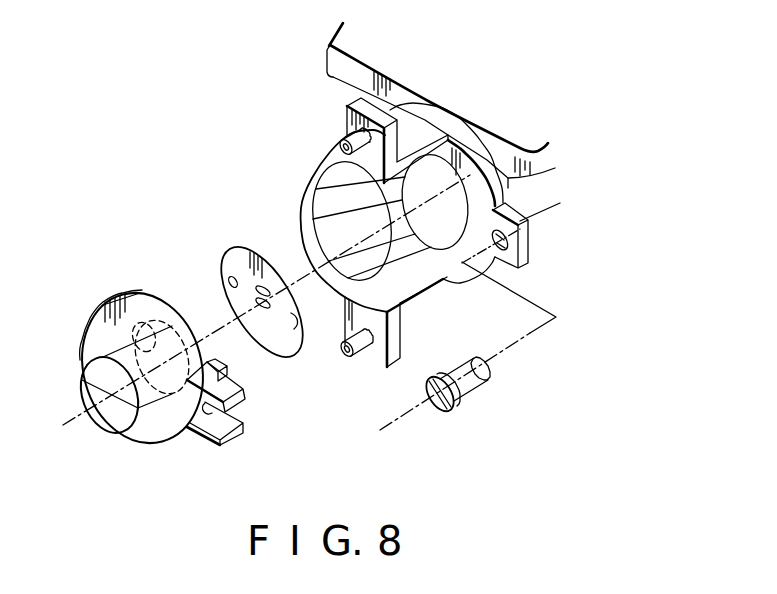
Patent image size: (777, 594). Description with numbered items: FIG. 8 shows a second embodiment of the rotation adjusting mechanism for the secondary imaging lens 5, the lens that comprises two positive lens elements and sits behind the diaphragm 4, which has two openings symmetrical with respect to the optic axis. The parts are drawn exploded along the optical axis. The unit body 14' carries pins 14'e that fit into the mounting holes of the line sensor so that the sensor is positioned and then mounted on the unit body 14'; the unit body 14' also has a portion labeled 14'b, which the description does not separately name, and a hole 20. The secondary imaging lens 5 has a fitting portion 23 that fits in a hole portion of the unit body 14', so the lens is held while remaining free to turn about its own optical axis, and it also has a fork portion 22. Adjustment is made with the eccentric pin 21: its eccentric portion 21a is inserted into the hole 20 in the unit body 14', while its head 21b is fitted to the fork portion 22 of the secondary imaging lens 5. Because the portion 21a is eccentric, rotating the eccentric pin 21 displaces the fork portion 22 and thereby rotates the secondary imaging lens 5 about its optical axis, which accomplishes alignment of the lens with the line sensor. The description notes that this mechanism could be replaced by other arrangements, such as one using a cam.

The unit body 14' is at (411, 99).
The pins 14'e is at (333, 253).
The clamp ring 14'b is at (425, 228).
The hole 20 is at (515, 243).
The diaphragm 4 is at (247, 262).
The secondary imaging lens 5 is at (106, 328).
The fitting portion 23 is at (185, 328).
The fork portion 22 is at (214, 430).
The eccentric pin 21 is at (475, 397).
The eccentric portion 21a is at (483, 373).
The head 21b is at (442, 412).